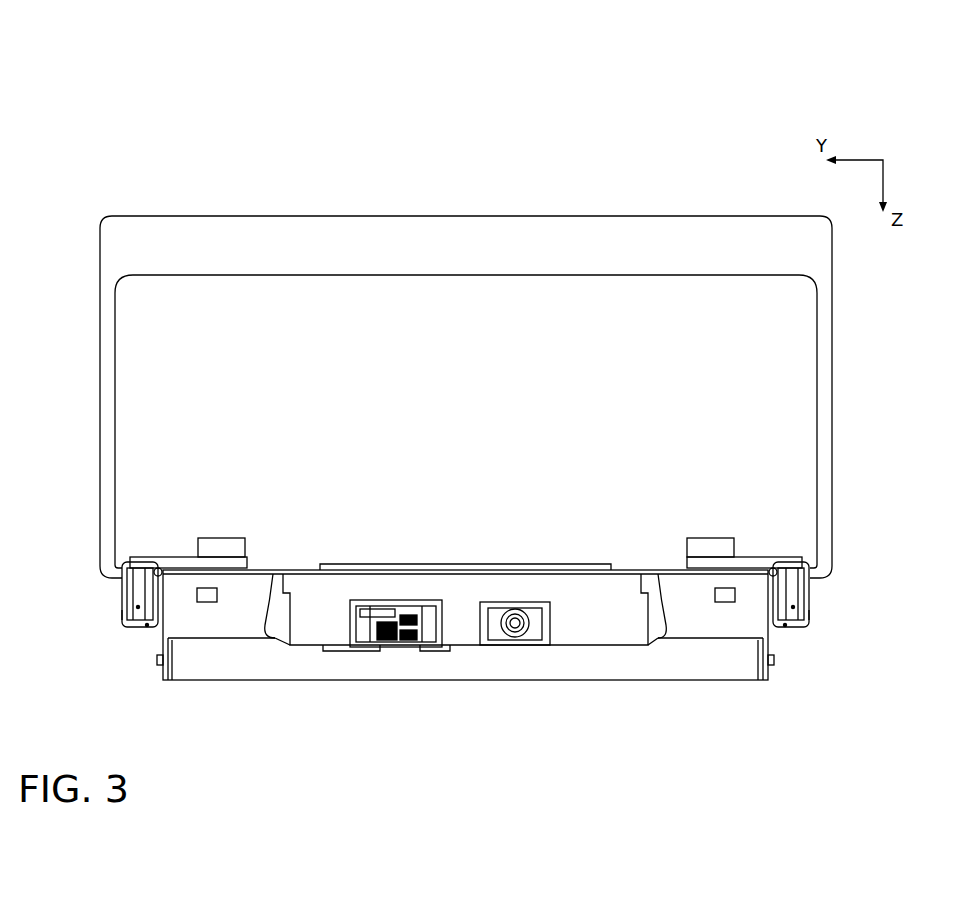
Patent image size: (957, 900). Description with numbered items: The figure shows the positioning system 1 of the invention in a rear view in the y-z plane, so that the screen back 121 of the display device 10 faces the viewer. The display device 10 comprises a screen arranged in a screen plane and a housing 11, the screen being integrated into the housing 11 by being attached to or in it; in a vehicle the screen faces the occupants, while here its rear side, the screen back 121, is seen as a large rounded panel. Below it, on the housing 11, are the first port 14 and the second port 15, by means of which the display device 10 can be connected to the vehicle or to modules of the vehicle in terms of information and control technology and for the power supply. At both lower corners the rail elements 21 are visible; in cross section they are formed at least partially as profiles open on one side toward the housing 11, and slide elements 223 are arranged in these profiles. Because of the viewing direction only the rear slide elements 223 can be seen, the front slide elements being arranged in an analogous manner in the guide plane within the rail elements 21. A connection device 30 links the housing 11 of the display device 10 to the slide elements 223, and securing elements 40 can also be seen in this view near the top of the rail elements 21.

The positioning system 1 is at (205, 96).
The display device 10 is at (355, 240).
The screen back 121 is at (484, 389).
The housing 11 is at (617, 664).
The securing elements 40 is at (175, 558).
The connection device 30 is at (158, 593).
The slide elements 223 is at (122, 618).
The rail elements 21 is at (147, 627).
The second port 15 is at (395, 648).
The first port 14 is at (497, 648).